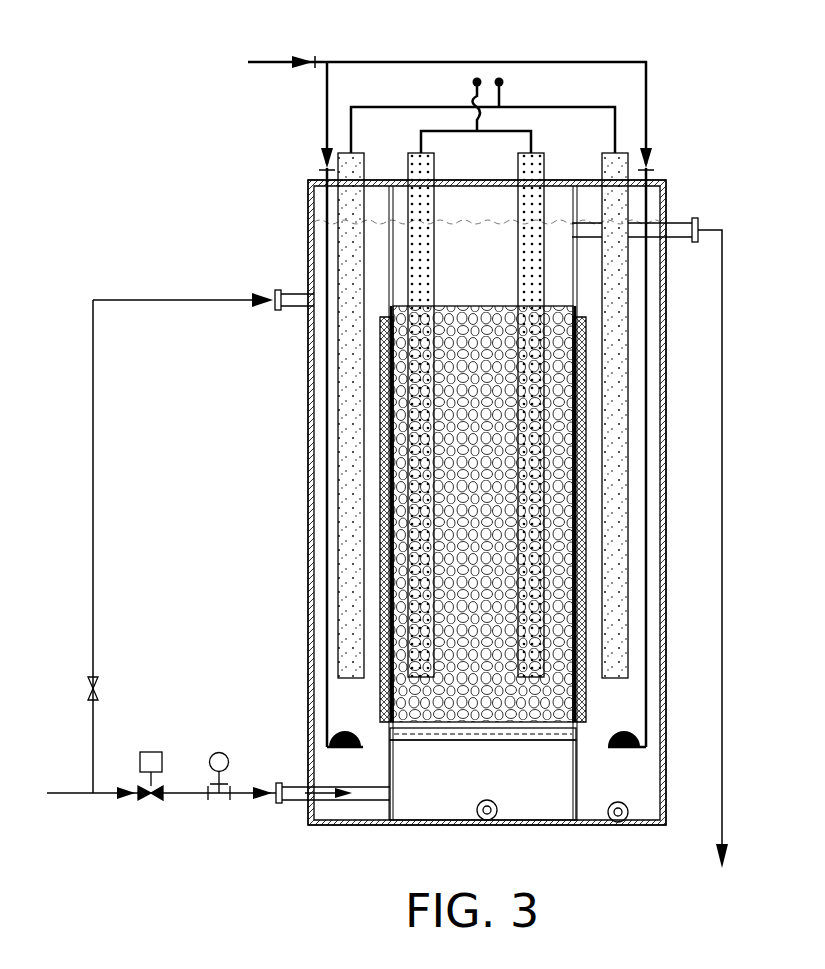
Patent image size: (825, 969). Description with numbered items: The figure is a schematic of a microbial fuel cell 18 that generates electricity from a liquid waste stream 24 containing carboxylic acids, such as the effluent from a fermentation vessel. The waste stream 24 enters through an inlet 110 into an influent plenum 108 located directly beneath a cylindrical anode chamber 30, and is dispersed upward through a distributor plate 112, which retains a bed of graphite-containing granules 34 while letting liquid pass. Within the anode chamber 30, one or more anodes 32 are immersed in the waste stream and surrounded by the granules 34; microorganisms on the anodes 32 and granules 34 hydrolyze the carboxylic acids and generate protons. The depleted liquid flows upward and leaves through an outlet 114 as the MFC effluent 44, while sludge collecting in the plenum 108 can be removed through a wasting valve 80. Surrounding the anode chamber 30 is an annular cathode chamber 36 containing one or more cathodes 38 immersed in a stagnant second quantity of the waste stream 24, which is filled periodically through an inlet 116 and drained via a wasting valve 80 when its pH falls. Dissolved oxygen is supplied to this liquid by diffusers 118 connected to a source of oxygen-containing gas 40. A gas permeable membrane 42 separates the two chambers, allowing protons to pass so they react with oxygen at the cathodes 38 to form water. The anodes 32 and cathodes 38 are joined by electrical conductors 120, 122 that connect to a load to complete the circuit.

The microbial fuel cell 18 is at (745, 100).
The liquid waste stream 24 is at (67, 793).
The anode chamber 30 is at (558, 265).
The anodes 32 is at (415, 436).
The graphite-containing granules 34 is at (560, 462).
The cathode chamber 36 is at (622, 712).
The cathodes 38 is at (345, 593).
The source of oxygen-containing gas 40 is at (268, 62).
The gas permeable membrane 42 is at (380, 517).
The MFC effluent 44 is at (722, 275).
The wasting valve 80 is at (493, 818).
The influent plenum 108 is at (463, 790).
The inlet 110 is at (293, 805).
The distributor plate 112 is at (395, 740).
The outlet 114 is at (690, 222).
The inlet 116 is at (290, 292).
The diffusers 118 is at (330, 737).
The electrical conductor 120 is at (544, 134).
The electrical conductor 122 is at (525, 107).